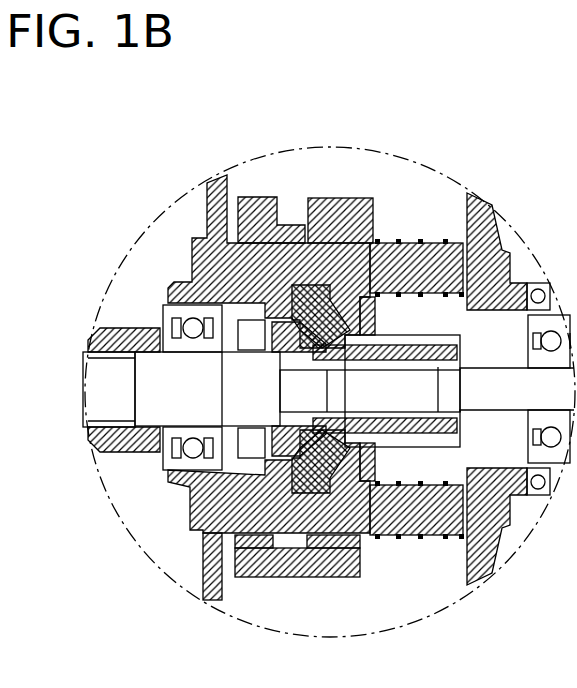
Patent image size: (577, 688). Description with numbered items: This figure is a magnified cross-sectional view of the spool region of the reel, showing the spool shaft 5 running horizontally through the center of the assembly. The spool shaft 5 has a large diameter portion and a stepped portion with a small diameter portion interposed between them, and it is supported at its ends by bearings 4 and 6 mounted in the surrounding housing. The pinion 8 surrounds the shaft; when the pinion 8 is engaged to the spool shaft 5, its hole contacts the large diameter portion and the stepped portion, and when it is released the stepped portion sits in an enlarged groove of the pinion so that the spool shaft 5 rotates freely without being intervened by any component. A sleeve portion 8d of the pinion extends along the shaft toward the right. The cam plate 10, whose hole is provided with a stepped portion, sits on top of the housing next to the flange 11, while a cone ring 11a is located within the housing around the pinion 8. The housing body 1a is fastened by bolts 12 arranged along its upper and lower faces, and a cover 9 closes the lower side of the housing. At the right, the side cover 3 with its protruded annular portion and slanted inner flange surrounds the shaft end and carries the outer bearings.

The housing body 1a is at (432, 262).
The side cover 3 is at (497, 224).
The bearing 4 is at (97, 332).
The spool shaft 5 is at (160, 388).
The bearing 6 is at (160, 467).
The pinion 8 is at (292, 336).
The sleeve 8d is at (365, 332).
The cover 9 is at (272, 560).
The cam plate 10 is at (290, 233).
The flange 11 is at (340, 230).
The cone ring 11a is at (305, 332).
The bolts 12 is at (403, 238).